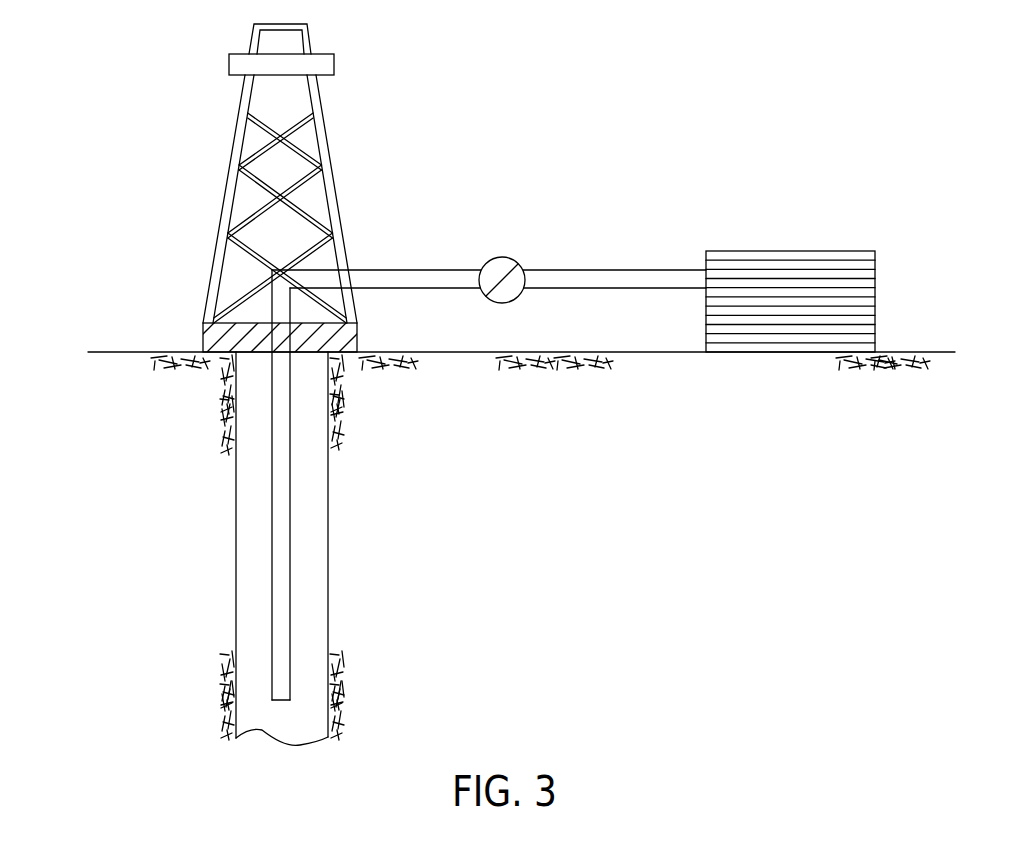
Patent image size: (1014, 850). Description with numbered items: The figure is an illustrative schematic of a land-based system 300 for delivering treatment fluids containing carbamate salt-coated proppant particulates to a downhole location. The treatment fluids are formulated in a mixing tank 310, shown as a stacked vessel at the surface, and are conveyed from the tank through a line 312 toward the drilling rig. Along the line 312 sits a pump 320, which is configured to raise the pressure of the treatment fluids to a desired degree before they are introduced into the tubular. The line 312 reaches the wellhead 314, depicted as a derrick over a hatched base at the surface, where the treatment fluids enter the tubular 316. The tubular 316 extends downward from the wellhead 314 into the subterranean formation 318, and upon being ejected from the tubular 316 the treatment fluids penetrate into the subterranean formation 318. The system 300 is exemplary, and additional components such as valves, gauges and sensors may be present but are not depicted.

The system 300 is at (130, 46).
The mixing tank 310 is at (749, 250).
The line 312 is at (394, 268).
The wellhead 314 is at (203, 340).
The tubular 316 is at (328, 545).
The subterranean formation 318 is at (155, 577).
The pump 320 is at (498, 257).